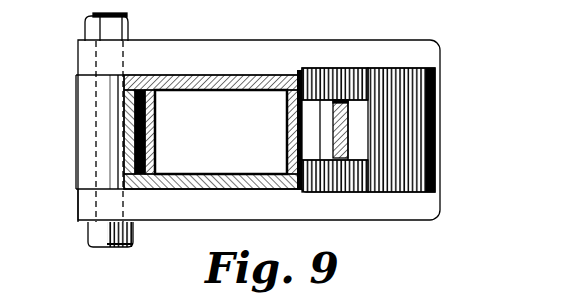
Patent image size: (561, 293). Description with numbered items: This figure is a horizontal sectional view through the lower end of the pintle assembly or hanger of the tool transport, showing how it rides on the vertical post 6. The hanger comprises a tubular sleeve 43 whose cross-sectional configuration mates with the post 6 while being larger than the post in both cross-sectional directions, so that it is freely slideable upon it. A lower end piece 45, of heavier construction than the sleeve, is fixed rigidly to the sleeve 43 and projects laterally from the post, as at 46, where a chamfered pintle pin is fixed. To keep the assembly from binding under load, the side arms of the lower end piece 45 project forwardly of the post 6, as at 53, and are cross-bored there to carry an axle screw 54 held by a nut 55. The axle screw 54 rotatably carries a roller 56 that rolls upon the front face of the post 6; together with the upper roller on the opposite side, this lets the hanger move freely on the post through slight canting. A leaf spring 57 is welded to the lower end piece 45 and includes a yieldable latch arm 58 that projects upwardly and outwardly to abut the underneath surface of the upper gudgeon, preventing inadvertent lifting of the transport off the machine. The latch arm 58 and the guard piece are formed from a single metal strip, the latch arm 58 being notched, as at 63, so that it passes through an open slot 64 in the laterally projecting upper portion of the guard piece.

The vertical post 6 is at (237, 92).
The tubular sleeve 43 is at (183, 74).
The lower end piece 45 is at (177, 208).
The laterally projecting portion of end piece 46 is at (432, 55).
The forwardly projecting side arms 53 is at (83, 208).
The axle screw 54 is at (105, 236).
The nut 55 is at (128, 30).
The roller 56 is at (78, 125).
The leaf spring 57 is at (436, 93).
The latch arm 58 is at (323, 143).
The notch 63 is at (360, 180).
The open slot 64 is at (360, 145).